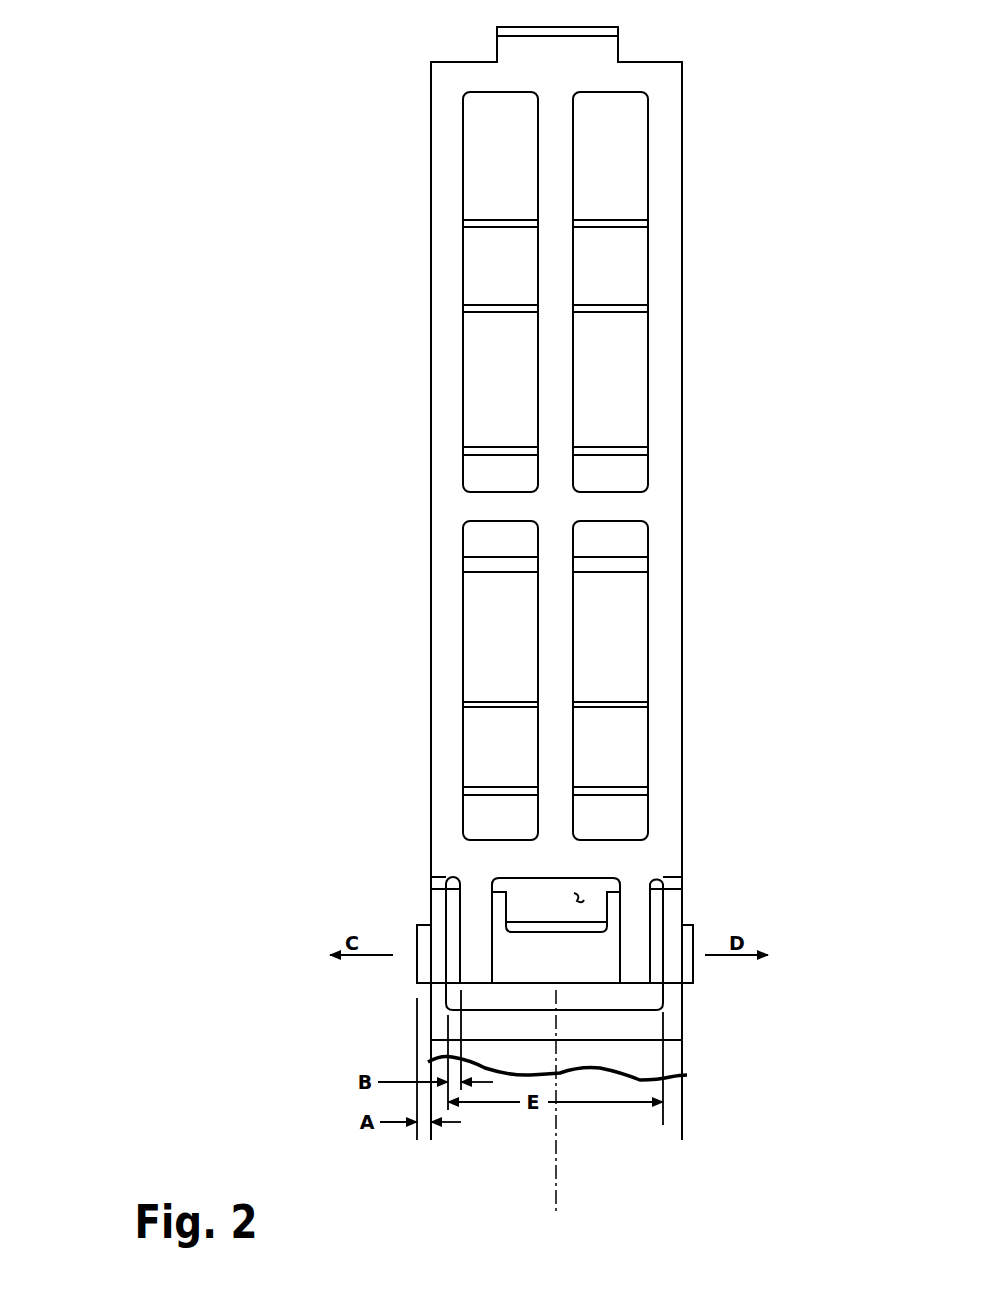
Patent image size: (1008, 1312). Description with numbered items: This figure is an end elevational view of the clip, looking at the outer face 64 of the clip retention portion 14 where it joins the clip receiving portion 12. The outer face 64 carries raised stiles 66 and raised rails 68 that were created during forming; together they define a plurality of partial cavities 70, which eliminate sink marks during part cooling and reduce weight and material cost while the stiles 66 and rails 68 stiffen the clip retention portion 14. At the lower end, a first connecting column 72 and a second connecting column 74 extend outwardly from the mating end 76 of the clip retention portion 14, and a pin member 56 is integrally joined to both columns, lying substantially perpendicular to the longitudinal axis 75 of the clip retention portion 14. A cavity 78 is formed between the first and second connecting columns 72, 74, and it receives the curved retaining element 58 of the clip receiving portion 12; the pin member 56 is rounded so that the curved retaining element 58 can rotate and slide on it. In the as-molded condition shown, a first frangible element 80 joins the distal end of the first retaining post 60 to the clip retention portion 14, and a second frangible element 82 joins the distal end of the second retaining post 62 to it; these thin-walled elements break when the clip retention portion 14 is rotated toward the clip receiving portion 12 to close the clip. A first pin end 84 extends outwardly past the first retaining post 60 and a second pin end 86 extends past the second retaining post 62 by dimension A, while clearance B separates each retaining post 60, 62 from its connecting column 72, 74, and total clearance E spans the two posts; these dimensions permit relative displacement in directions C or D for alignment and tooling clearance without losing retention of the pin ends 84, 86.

The clip receiving portion 12 is at (685, 1068).
The clip retention portion 14 is at (707, 222).
The pin member 56 is at (558, 950).
The curved retaining element 58 is at (543, 930).
The first retaining post 60 is at (695, 933).
The second retaining post 62 is at (438, 910).
The outer face 64 is at (443, 765).
The raised stiles 66 is at (553, 615).
The raised rails 68 is at (499, 509).
The partial cavities 70 is at (605, 266).
The first connecting column 72 is at (632, 935).
The second connecting column 74 is at (478, 957).
The longitudinal axis 75 is at (555, 1175).
The mating end 76 is at (562, 878).
The cavity 78 is at (580, 897).
The first frangible element 80 is at (673, 913).
The second frangible element 82 is at (433, 880).
The first pin end 84 is at (695, 935).
The second pin end 86 is at (415, 938).